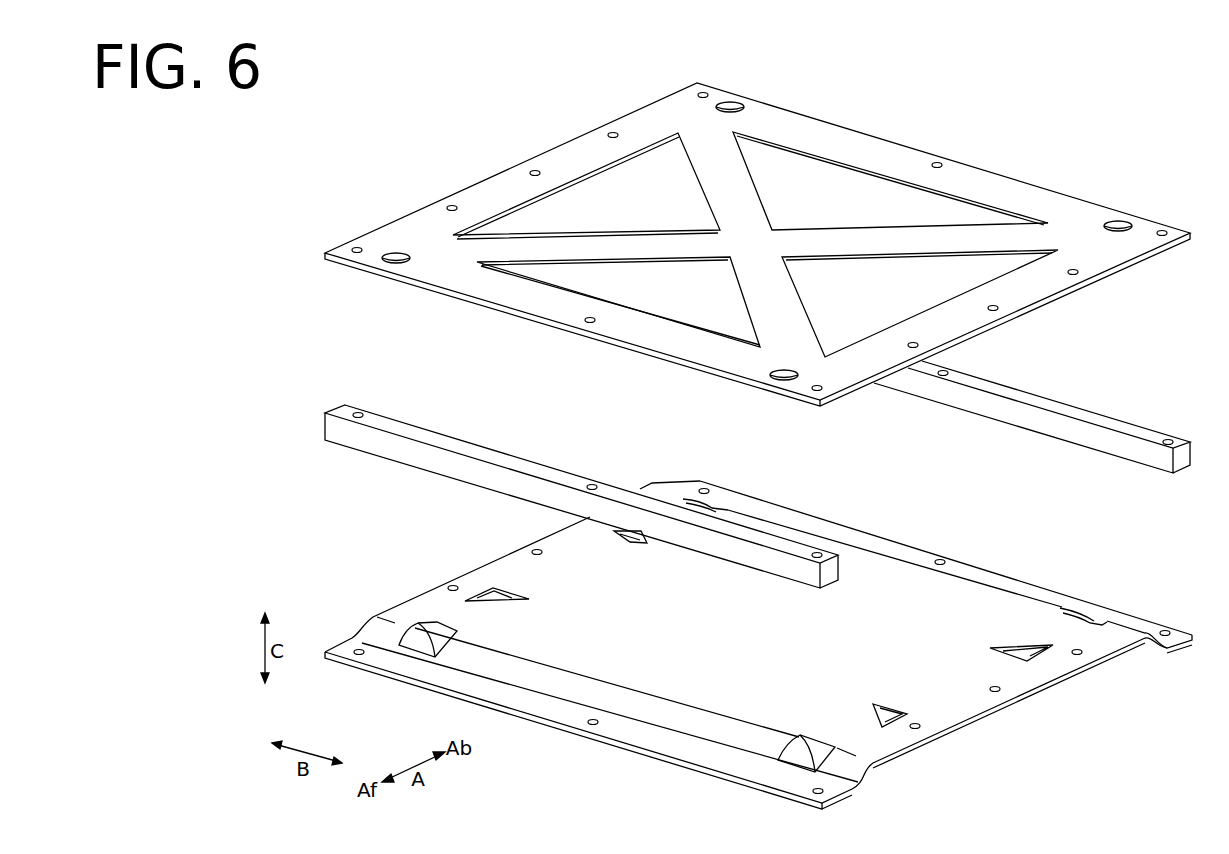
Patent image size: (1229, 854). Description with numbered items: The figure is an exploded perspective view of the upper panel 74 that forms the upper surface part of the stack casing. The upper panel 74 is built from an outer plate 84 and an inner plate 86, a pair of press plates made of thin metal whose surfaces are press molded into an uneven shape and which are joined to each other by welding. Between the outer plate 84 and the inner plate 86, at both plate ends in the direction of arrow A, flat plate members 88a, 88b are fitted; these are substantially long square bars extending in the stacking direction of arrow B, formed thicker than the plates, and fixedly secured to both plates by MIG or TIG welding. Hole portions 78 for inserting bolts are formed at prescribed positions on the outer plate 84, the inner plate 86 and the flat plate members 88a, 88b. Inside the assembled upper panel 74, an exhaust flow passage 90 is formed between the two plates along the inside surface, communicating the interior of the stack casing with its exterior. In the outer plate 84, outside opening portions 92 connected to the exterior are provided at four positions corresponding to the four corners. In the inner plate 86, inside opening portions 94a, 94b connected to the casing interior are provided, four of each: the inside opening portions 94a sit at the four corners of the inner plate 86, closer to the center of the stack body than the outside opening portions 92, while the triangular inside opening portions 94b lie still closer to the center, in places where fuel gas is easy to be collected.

The upper panel 74 is at (968, 95).
The hole portions 78 is at (356, 246).
The outer plate 84 is at (1072, 193).
The inner plate 86 is at (1033, 700).
The flat plate member 88a is at (402, 426).
The flat plate member 88b is at (1118, 427).
The exhaust flow passage 90 is at (885, 578).
The outside opening portions 92 is at (731, 102).
The inside opening portions 94a is at (722, 507).
The inside opening portions 94b is at (507, 596).